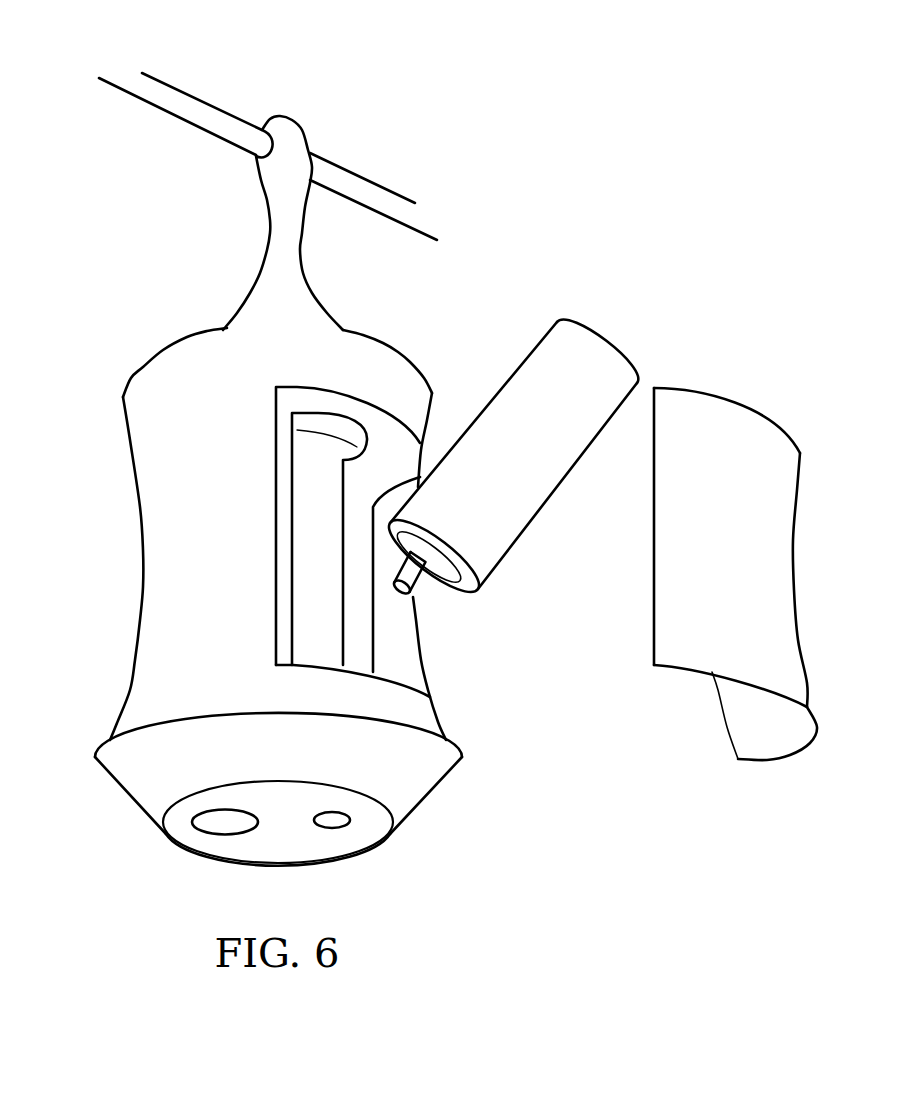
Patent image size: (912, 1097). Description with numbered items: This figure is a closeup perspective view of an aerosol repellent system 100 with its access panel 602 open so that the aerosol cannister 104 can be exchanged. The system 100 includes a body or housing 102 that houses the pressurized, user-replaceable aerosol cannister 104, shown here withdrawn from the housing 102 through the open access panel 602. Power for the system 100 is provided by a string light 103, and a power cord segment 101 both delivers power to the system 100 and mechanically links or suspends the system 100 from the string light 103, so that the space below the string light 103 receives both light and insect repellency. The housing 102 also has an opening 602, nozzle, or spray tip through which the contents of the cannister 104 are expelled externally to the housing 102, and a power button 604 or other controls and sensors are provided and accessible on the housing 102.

The aerosol repellent system 100 is at (264, 519).
The power cord segment 101 is at (270, 225).
The housing 102 is at (264, 625).
The string light 103 is at (178, 89).
The aerosol cannister 104 is at (600, 331).
The access panel 602 is at (747, 398).
The power button 604 is at (222, 823).